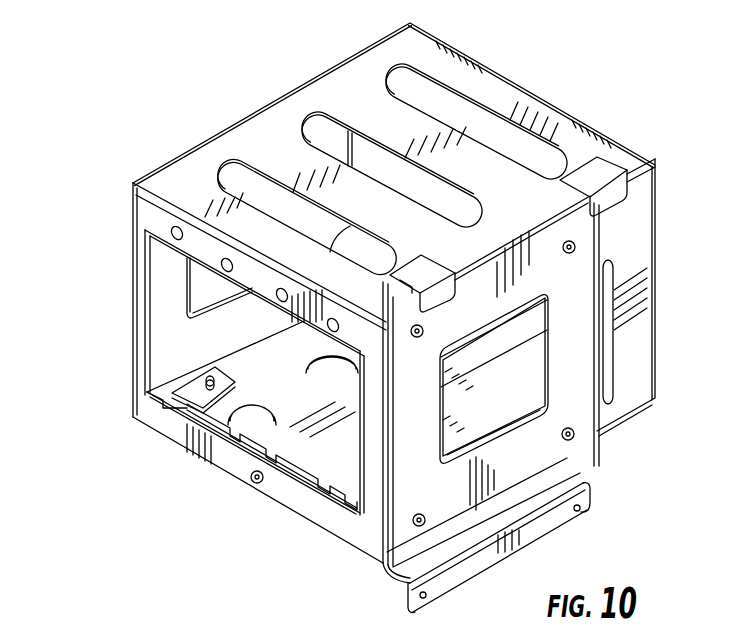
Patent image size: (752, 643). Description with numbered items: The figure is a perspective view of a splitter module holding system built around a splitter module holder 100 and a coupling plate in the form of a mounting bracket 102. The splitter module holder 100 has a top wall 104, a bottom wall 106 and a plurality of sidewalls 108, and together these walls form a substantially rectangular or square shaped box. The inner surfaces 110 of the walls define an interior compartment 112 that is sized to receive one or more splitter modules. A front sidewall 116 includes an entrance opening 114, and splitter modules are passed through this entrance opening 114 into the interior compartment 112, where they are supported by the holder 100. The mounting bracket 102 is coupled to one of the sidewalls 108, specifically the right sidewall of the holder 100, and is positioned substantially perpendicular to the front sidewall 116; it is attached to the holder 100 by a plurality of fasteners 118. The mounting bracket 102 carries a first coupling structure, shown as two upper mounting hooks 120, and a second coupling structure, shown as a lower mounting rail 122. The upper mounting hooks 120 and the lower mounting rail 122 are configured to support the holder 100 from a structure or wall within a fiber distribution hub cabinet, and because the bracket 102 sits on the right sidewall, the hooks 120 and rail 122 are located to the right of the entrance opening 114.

The splitter module holder 100 is at (671, 106).
The mounting bracket 102 is at (408, 478).
The top wall 104 is at (494, 96).
The bottom wall 106 is at (250, 373).
The sidewalls 108 is at (640, 363).
The inner surfaces 110 is at (266, 379).
The interior compartment 112 is at (323, 380).
The entrance opening 114 is at (296, 457).
The front sidewall 116 is at (318, 512).
The fasteners 118 is at (423, 335).
The upper mounting hooks 120 is at (431, 290).
The lower mounting rail 122 is at (450, 578).